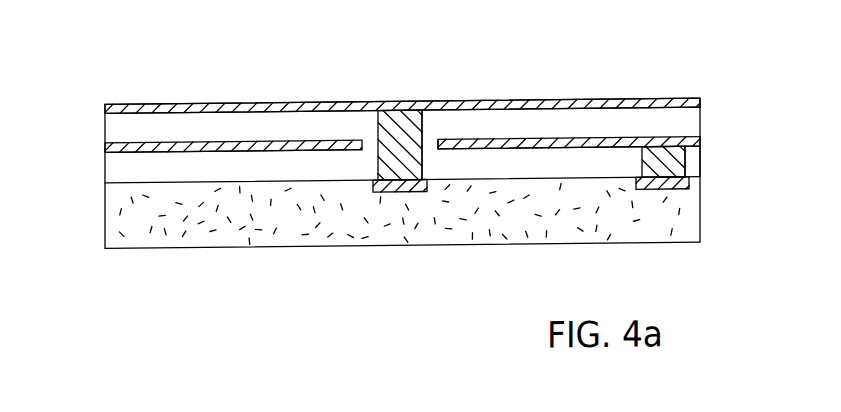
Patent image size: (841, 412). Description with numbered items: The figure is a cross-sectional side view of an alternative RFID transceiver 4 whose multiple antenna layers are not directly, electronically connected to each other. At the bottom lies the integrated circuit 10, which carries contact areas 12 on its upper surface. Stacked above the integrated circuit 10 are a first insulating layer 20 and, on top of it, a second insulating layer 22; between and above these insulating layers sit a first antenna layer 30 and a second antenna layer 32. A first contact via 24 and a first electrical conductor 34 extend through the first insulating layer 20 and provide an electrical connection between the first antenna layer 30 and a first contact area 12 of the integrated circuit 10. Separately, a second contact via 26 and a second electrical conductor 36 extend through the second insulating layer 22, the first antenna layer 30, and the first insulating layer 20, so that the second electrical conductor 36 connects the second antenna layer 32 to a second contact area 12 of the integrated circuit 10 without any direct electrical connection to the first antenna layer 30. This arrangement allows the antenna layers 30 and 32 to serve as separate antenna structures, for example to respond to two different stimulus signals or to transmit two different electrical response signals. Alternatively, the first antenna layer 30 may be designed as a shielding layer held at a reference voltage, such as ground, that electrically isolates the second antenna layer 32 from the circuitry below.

The RFID transceiver 4 is at (657, 57).
The integrated circuit 10 is at (118, 224).
The contact area 12 is at (382, 196).
The first insulating layer 20 is at (112, 168).
The second insulating layer 22 is at (112, 124).
The first contact via 24 is at (685, 164).
The second contact via 26 is at (422, 131).
The first antenna layer 30 is at (112, 149).
The second antenna layer 32 is at (173, 107).
The first electrical conductor 34 is at (683, 167).
The second electrical conductor 36 is at (405, 121).